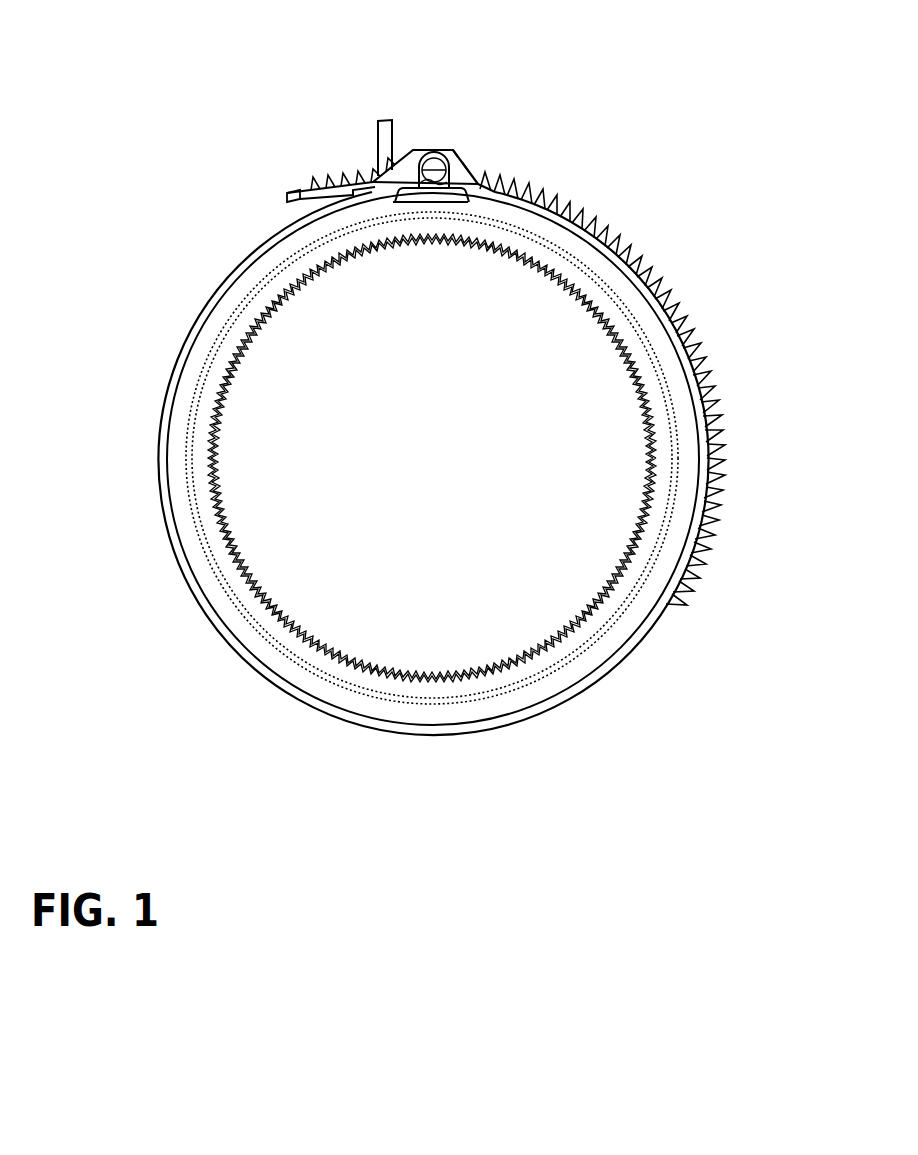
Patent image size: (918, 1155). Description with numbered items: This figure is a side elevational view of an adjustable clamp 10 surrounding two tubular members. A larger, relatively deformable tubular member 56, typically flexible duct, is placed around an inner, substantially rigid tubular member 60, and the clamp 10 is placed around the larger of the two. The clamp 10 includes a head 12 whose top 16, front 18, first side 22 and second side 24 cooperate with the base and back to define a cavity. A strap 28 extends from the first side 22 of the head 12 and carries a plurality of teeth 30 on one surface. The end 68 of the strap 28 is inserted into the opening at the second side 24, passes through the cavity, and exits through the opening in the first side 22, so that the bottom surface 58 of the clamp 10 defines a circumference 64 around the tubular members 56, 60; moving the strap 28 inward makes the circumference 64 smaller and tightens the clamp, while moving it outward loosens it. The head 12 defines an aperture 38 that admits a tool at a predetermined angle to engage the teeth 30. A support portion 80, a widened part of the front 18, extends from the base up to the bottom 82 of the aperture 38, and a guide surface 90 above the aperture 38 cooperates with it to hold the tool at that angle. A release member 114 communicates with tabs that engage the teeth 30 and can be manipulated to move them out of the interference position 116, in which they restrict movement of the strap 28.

The adjustable clamp 10 is at (158, 130).
The head 12 is at (476, 172).
The top 16 is at (428, 152).
The front 18 is at (455, 200).
The first side 22 is at (423, 150).
The second side 24 is at (488, 184).
The strap 28 is at (622, 655).
The teeth 30 is at (718, 478).
The aperture 38 is at (464, 160).
The tubular member 56 is at (253, 618).
The bottom surface 58 is at (175, 398).
The tubular member 60 is at (635, 528).
The circumference 64 is at (643, 622).
The end 68 is at (286, 200).
The support portion 80 is at (404, 198).
The bottom 82 is at (436, 202).
The guide surface 90 is at (450, 150).
The release member 114 is at (385, 150).
The interference position 116 is at (367, 123).